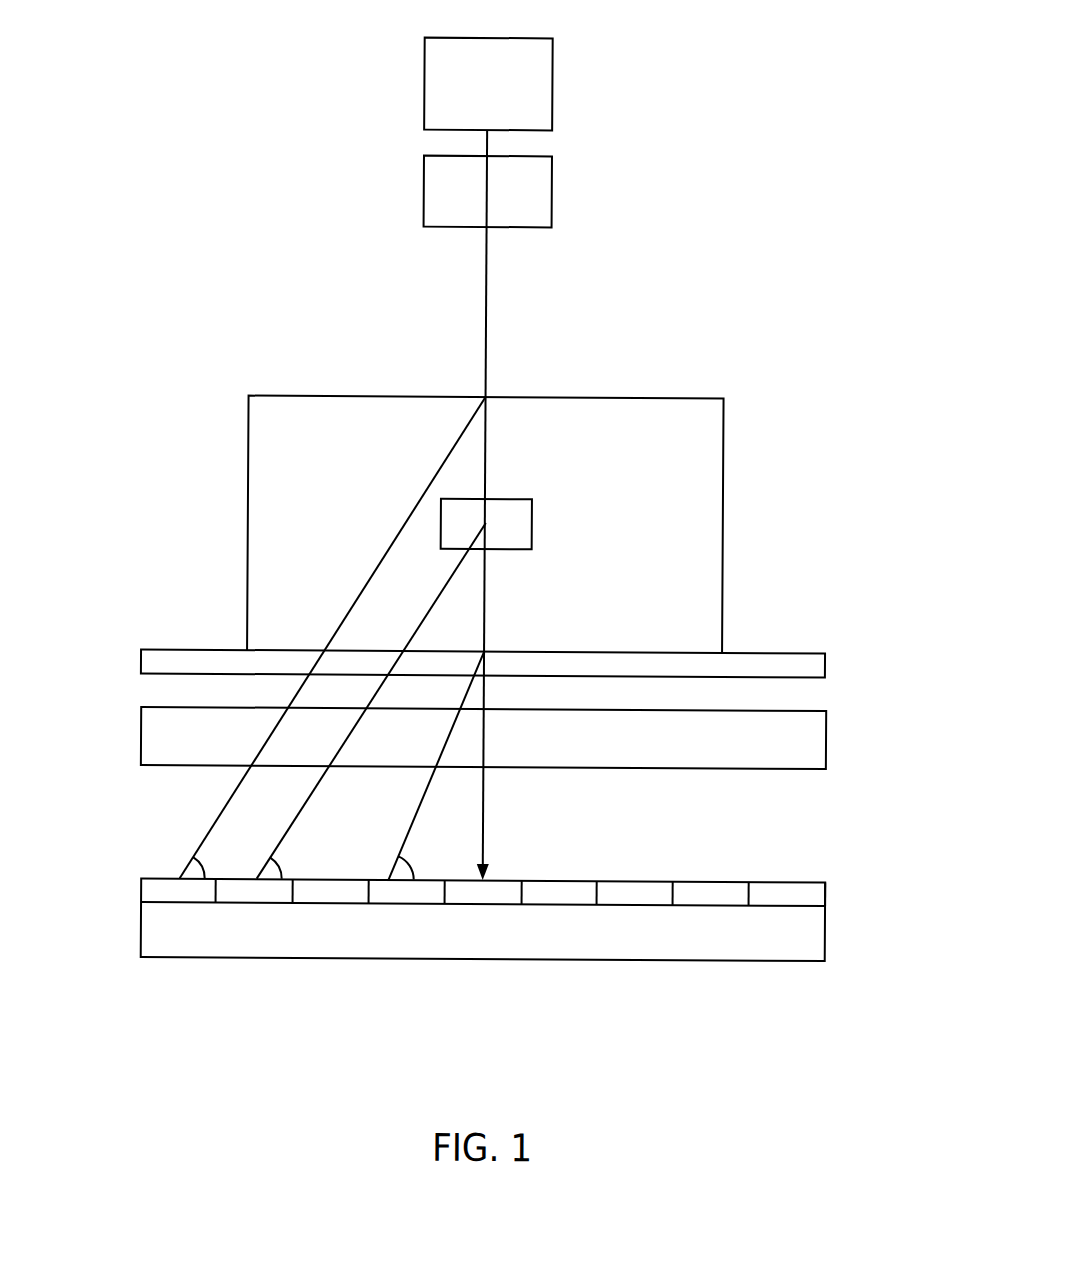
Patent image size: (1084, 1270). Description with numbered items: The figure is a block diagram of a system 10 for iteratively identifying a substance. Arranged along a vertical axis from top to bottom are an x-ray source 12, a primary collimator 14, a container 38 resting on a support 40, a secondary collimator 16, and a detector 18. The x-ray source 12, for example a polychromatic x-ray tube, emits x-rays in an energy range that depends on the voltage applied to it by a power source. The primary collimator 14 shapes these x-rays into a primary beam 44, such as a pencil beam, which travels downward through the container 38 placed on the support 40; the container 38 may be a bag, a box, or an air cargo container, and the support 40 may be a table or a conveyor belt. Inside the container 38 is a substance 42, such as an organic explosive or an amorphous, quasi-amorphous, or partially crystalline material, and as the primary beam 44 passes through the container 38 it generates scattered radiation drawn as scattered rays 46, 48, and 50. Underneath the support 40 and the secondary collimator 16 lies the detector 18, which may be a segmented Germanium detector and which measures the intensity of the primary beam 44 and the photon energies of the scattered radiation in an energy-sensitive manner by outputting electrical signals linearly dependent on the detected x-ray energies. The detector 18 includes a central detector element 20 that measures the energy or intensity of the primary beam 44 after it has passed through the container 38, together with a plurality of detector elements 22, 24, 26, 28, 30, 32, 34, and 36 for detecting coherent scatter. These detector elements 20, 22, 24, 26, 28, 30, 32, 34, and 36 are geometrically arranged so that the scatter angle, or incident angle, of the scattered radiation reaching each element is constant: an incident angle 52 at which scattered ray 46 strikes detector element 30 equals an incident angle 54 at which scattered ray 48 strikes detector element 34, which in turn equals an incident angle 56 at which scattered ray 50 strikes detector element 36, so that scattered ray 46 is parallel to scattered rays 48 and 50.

The system 10 is at (663, 42).
The x-ray source 12 is at (549, 83).
The primary collimator 14 is at (549, 192).
The secondary collimator 16 is at (826, 739).
The detector 18 is at (826, 935).
The central detector element 20 is at (503, 880).
The detector element 22 is at (578, 880).
The detector element 24 is at (654, 880).
The detector element 26 is at (730, 880).
The detector element 28 is at (804, 880).
The detector element 30 is at (414, 904).
The detector element 32 is at (338, 904).
The detector element 34 is at (262, 905).
The detector element 36 is at (184, 905).
The container 38 is at (661, 396).
The support 40 is at (806, 650).
The substance 42 is at (531, 523).
The primary beam 44 is at (484, 270).
The scattered ray 46 is at (416, 808).
The scattered ray 48 is at (383, 684).
The scattered ray 50 is at (293, 696).
The incident angle 52 is at (416, 862).
The incident angle 54 is at (284, 862).
The incident angle 56 is at (207, 862).